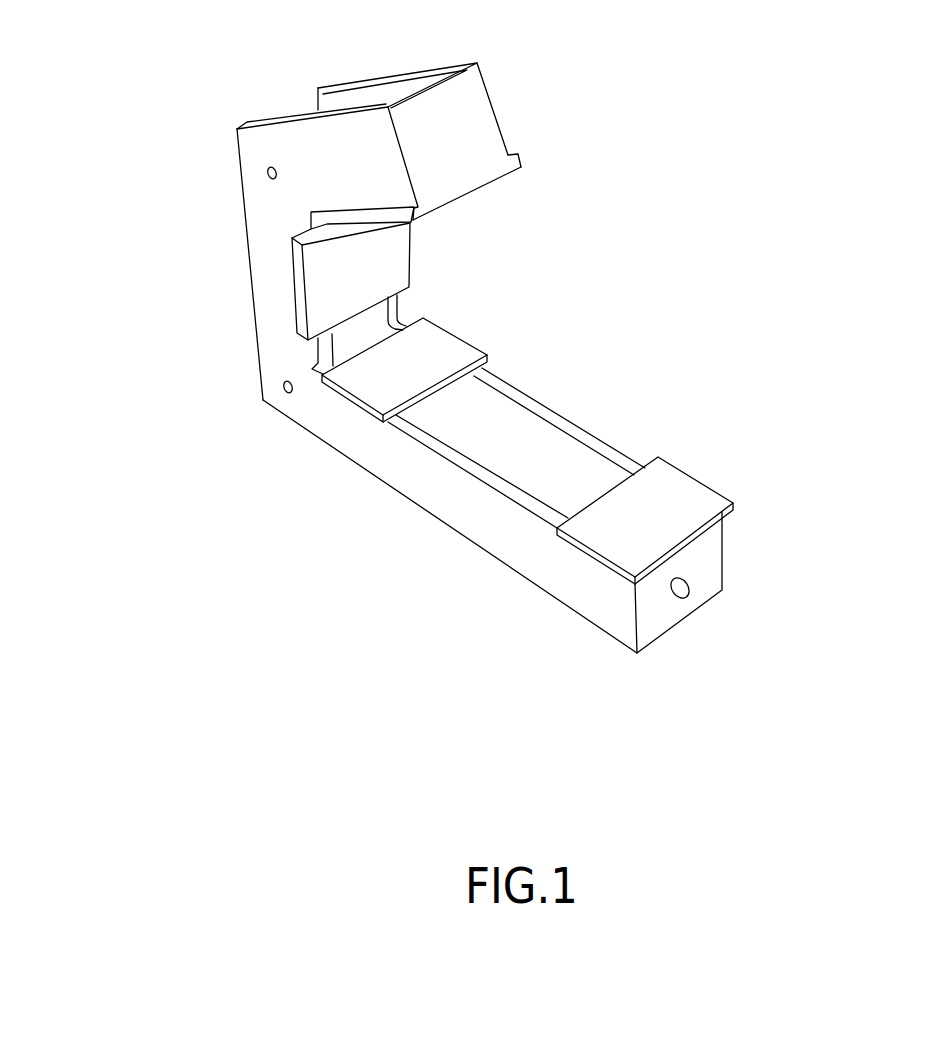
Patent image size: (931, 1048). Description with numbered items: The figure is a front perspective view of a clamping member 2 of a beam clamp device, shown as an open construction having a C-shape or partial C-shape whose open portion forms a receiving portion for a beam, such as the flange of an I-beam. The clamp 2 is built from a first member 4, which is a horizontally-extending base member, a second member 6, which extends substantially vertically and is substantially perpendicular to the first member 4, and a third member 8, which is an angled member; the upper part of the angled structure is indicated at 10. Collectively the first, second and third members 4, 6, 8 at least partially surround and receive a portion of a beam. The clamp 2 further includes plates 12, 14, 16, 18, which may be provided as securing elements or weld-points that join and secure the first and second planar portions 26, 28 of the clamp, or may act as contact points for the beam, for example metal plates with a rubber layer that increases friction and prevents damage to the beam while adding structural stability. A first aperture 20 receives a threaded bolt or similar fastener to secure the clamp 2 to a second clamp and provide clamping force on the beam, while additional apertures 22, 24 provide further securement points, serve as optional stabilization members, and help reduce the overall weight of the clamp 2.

The clamping member 2 is at (180, 303).
The first member 4 is at (387, 475).
The second member 6 is at (282, 327).
The third member 8 is at (337, 160).
The upper housing side face 10 is at (463, 128).
The plate 12 is at (670, 510).
The plate 14 is at (418, 350).
The plate 16 is at (380, 266).
The plate 18 is at (497, 182).
The first aperture 20 is at (697, 585).
The additional aperture 22 is at (267, 180).
The additional aperture 24 is at (278, 396).
The first planar portion 26 is at (463, 530).
The second planar portion 28 is at (570, 427).